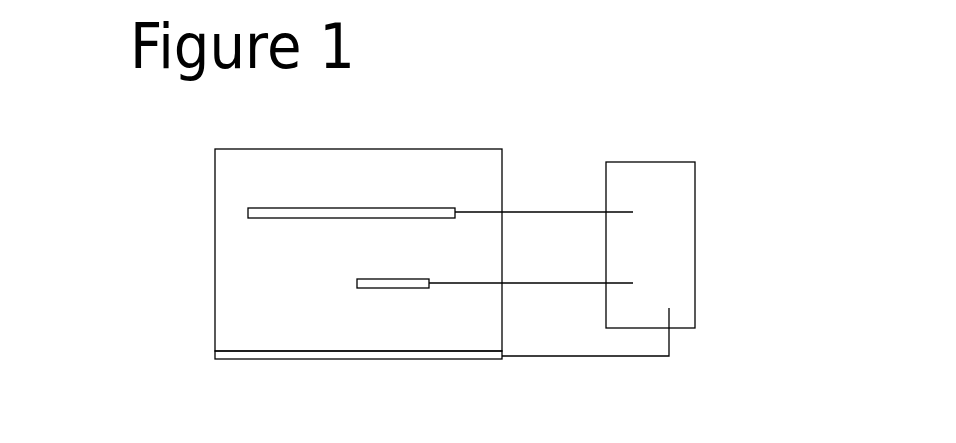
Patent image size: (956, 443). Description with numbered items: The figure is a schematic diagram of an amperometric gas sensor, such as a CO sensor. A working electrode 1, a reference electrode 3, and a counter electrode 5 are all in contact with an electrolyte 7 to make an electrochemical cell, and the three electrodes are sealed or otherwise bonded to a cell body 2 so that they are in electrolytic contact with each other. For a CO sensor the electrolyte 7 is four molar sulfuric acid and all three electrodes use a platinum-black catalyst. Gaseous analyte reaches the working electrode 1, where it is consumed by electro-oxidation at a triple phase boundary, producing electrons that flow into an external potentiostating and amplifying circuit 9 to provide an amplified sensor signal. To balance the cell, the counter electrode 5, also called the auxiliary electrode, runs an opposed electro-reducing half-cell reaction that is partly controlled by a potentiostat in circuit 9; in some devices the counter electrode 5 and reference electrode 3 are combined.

The working electrode 1 is at (300, 370).
The cell body 2 is at (446, 222).
The reference electrode 3 is at (332, 272).
The counter electrode 5 is at (333, 188).
The electrolyte 7 is at (252, 313).
The external potentiostating and amplifying circuit 9 is at (695, 214).